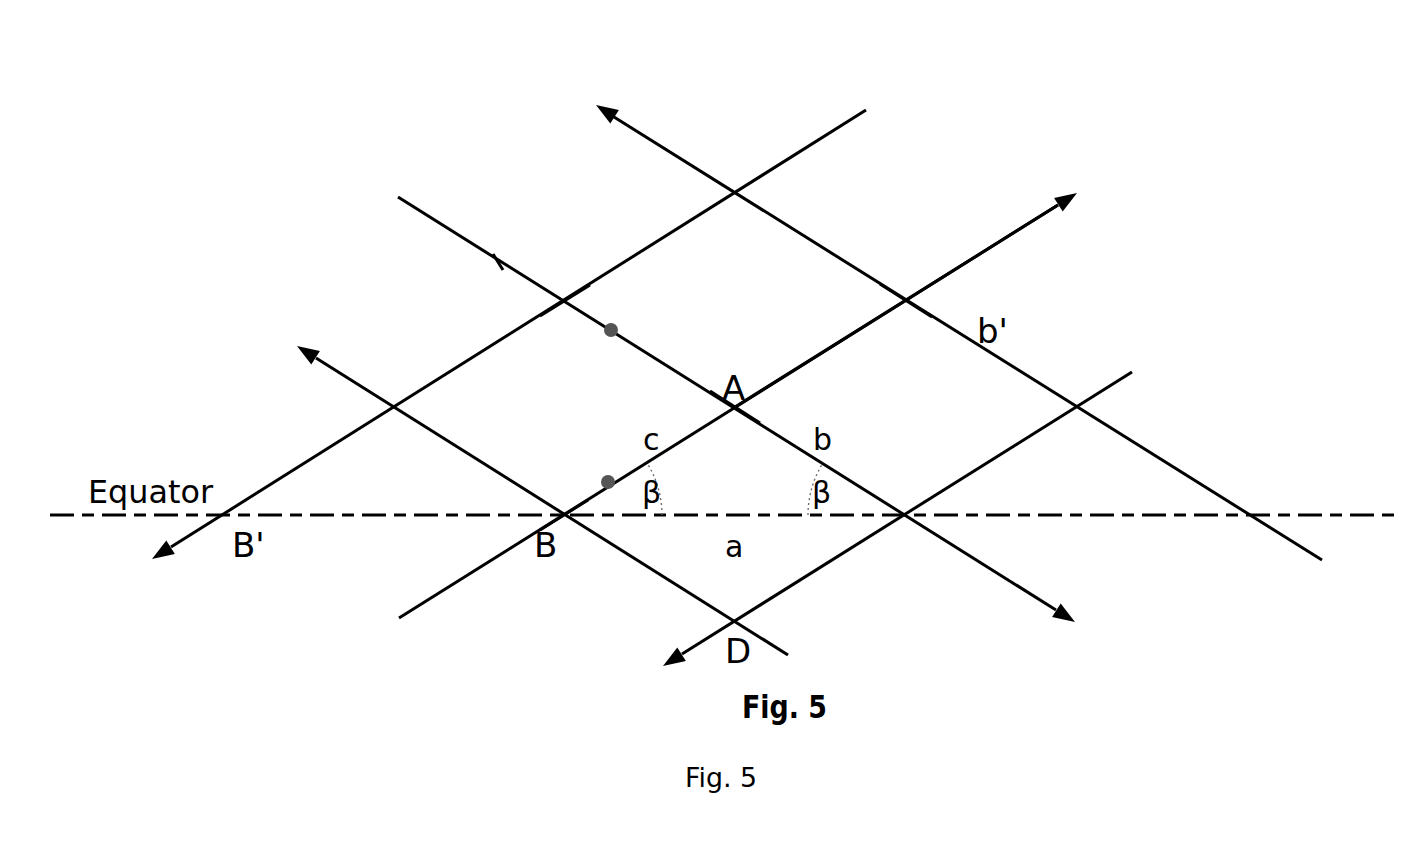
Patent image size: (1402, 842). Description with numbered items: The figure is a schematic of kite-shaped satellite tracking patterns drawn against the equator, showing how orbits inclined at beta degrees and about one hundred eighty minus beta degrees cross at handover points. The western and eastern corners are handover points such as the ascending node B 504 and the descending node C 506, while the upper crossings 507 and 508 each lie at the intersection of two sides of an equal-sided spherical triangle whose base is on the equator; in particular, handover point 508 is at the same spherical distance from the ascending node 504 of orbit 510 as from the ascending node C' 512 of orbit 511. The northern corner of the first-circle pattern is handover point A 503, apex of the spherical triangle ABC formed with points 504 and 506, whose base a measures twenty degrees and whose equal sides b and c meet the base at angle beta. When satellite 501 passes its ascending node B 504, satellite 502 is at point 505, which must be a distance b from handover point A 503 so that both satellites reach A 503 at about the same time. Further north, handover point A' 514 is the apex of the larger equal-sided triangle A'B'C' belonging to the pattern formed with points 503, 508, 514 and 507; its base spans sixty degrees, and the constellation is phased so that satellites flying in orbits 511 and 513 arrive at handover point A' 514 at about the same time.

The satellite 501 is at (601, 479).
The satellite 502 is at (604, 328).
The handover point A 503 is at (731, 403).
The handover point B 504 is at (560, 515).
The point 505 is at (496, 261).
The handover point C 506 is at (907, 513).
The handover point 507 is at (564, 301).
The handover point 508 is at (913, 296).
The orbit 510 is at (1023, 233).
The orbit 511 is at (1283, 532).
The ascending node C' 512 is at (1247, 507).
The orbit 513 is at (800, 157).
The handover point A' 514 is at (740, 194).